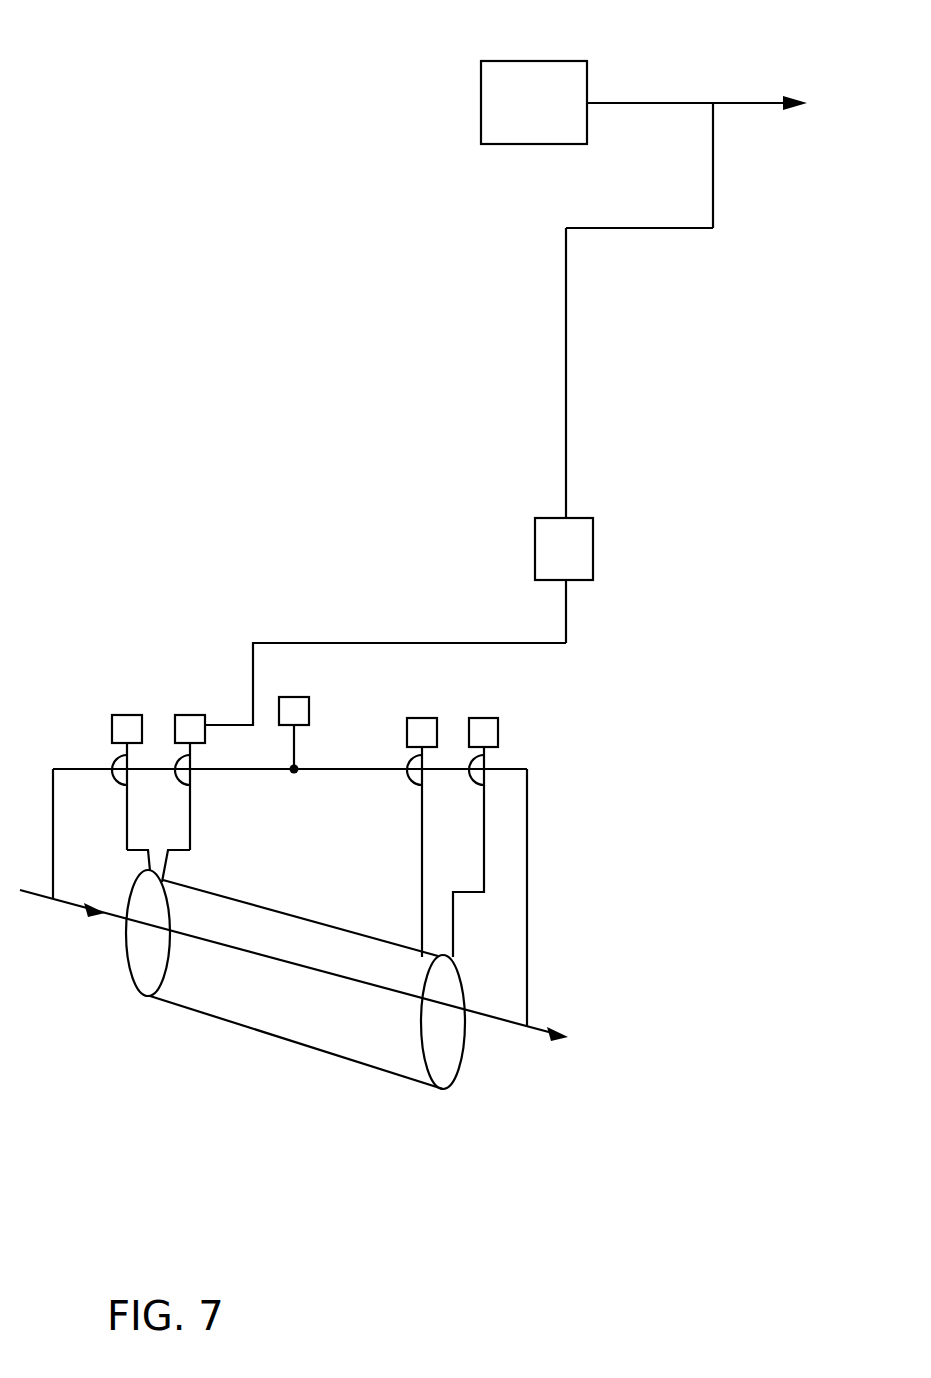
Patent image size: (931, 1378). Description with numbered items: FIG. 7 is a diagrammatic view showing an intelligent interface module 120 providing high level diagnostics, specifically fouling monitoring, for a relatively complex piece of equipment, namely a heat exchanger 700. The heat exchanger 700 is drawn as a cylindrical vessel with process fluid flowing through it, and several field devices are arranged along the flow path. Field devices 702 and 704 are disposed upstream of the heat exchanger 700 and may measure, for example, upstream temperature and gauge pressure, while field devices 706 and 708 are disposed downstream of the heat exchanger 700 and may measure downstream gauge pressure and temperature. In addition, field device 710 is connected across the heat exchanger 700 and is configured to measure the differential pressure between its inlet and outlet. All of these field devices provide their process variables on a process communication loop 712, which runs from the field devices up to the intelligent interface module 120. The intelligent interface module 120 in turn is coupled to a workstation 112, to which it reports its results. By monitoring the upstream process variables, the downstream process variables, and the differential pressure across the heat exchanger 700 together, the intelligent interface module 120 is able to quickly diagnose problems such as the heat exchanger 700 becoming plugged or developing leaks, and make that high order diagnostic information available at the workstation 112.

The workstation 112 is at (500, 60).
The intelligent interface module 120 is at (593, 540).
The heat exchanger 700 is at (372, 1070).
The field device 702 is at (125, 713).
The field device 704 is at (188, 717).
The field device 706 is at (420, 717).
The field device 708 is at (498, 725).
The field device 710 is at (295, 697).
The process communication loop 712 is at (337, 642).